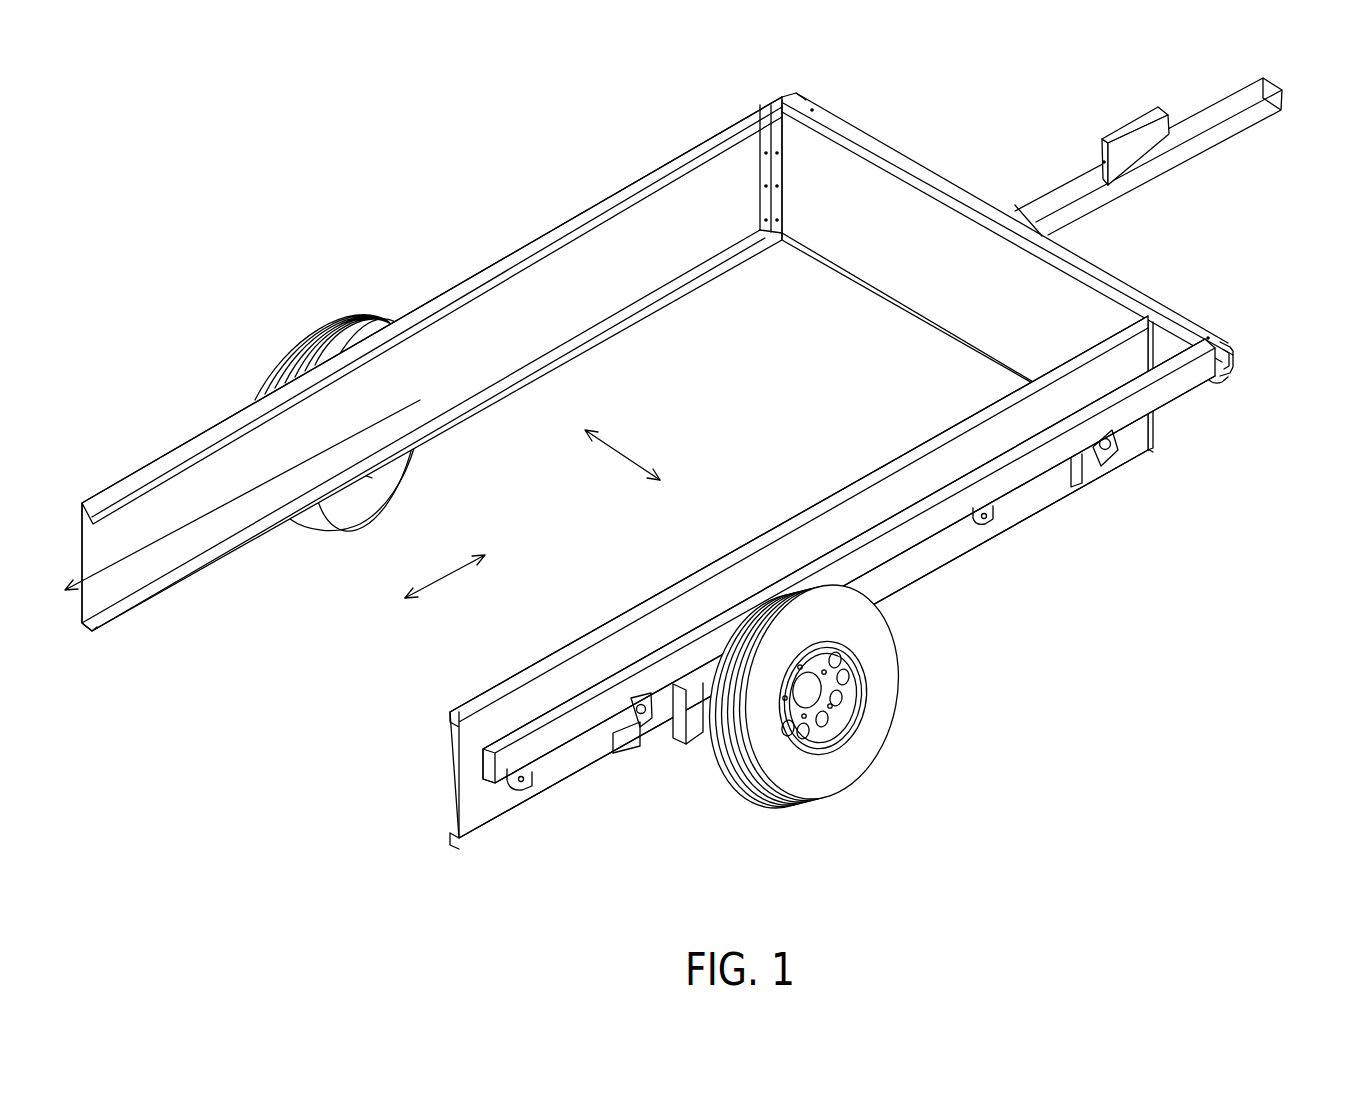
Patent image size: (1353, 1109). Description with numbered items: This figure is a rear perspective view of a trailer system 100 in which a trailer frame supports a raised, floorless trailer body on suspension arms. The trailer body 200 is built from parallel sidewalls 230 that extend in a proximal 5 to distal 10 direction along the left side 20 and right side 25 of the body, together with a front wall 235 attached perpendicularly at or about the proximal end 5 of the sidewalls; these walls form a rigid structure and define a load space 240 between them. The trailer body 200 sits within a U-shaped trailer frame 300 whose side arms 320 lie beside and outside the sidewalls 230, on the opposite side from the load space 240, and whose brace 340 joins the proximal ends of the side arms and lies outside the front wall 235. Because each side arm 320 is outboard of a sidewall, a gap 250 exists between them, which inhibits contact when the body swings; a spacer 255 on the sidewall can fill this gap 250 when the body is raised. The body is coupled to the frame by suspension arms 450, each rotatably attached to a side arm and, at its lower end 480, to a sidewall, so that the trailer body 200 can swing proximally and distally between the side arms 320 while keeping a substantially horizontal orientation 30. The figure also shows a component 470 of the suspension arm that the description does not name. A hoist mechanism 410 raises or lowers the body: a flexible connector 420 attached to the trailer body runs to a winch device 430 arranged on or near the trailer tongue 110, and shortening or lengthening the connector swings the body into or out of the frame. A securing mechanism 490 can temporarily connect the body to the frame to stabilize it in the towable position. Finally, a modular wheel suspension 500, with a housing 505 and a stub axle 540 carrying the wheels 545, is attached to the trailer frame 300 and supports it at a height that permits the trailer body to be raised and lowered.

The trailer system 100 is at (273, 227).
The trailer body 200 is at (560, 238).
The sidewalls 230 is at (520, 302).
The front wall 235 is at (1020, 300).
The load space 240 is at (378, 690).
The gap 250 is at (1157, 357).
The substantially horizontal orientation 30 is at (804, 179).
The left side 20 is at (607, 437).
The right side 25 is at (667, 492).
The proximal end 5 is at (456, 564).
The distal direction 10 is at (391, 607).
The trailer frame 300 is at (1205, 389).
The side arm 320 is at (910, 533).
The brace 340 is at (1187, 322).
The suspension arm 450 is at (563, 752).
The bracket 470 is at (992, 503).
The lower end 480 is at (1108, 478).
The securing mechanism 490 is at (1115, 457).
The spacer 255 is at (625, 740).
The housing 505 is at (703, 720).
The modular wheel suspension 500 is at (740, 797).
The stub axle 540 is at (817, 697).
The wheels 545 is at (825, 765).
The trailer tongue 110 is at (1207, 147).
The hoist mechanism 410 is at (1058, 72).
The flexible connector 420 is at (1062, 187).
The winch device 430 is at (1128, 137).